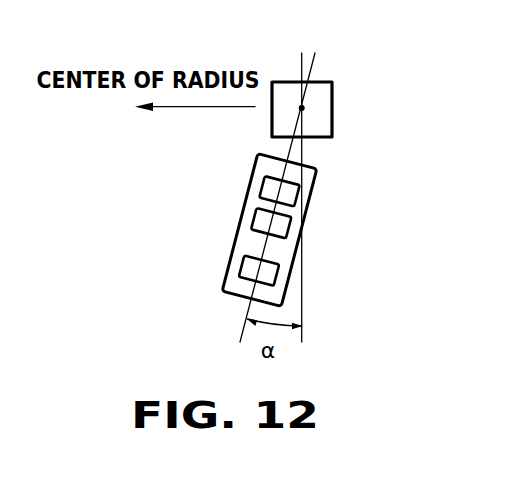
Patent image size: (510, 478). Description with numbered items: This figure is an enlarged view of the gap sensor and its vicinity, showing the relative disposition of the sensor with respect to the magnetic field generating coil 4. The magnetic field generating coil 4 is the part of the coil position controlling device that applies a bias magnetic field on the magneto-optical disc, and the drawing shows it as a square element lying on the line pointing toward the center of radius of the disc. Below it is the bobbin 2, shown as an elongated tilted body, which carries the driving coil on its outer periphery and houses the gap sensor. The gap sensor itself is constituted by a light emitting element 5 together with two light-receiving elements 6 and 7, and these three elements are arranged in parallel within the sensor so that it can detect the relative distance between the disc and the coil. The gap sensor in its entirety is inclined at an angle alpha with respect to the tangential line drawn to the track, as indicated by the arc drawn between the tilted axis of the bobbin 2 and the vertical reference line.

The bobbin 2 is at (315, 168).
The magnetic field generating coil 4 is at (323, 100).
The light emitting element 5 is at (289, 224).
The light-receiving element 6 is at (297, 190).
The light-receiving element 7 is at (274, 272).